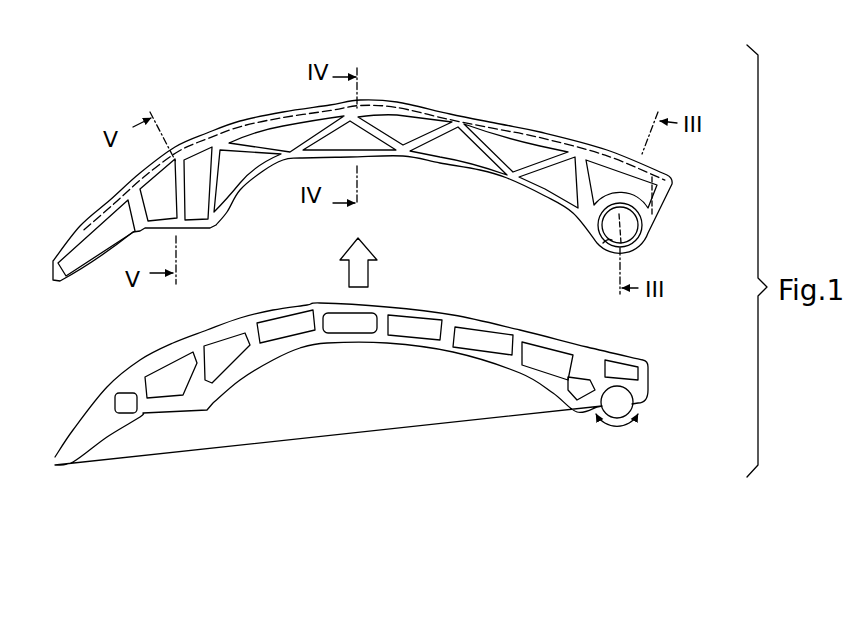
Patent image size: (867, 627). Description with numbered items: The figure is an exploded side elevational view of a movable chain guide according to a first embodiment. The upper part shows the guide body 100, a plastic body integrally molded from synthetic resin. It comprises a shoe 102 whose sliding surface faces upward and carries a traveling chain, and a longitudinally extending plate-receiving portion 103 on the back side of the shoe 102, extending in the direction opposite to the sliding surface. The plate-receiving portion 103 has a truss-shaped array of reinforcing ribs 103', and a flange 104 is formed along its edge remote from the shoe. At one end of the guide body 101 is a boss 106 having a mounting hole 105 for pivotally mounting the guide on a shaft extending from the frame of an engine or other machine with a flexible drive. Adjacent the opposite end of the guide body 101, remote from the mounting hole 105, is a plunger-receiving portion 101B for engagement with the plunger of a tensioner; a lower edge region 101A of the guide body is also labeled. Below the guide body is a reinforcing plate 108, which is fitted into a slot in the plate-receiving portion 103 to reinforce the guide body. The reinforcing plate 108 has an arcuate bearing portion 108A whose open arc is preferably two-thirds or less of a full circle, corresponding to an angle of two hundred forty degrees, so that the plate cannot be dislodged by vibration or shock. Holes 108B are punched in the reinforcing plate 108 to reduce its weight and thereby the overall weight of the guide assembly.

The guide body 100 is at (396, 167).
The guide body 101 is at (672, 190).
The guide body lower edge portion 101A is at (572, 239).
The plunger-receiving portion 101B is at (201, 244).
The shoe 102 is at (470, 112).
The plate-receiving portion 103 is at (530, 124).
The reinforcing ribs 103' is at (452, 172).
The flange 104 is at (255, 175).
The mounting hole 105 is at (607, 240).
The boss 106 is at (648, 236).
The reinforcing plate 108 is at (393, 384).
The arcuate bearing portion 108A is at (637, 387).
The holes 108B is at (420, 334).